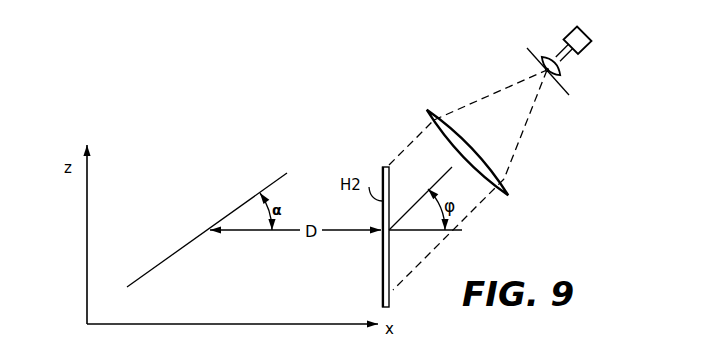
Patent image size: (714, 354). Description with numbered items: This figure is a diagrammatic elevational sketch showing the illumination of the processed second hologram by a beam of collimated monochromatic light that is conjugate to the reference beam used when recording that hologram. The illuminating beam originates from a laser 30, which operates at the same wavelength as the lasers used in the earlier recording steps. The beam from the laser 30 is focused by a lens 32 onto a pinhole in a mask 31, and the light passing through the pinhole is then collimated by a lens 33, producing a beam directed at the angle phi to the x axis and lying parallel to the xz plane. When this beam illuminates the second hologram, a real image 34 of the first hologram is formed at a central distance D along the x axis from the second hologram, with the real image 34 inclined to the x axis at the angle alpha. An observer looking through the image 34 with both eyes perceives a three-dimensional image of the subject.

The laser 30 is at (583, 49).
The mask 31 is at (560, 94).
The lens 32 is at (562, 72).
The lens 33 is at (508, 187).
The real image 34 is at (183, 248).